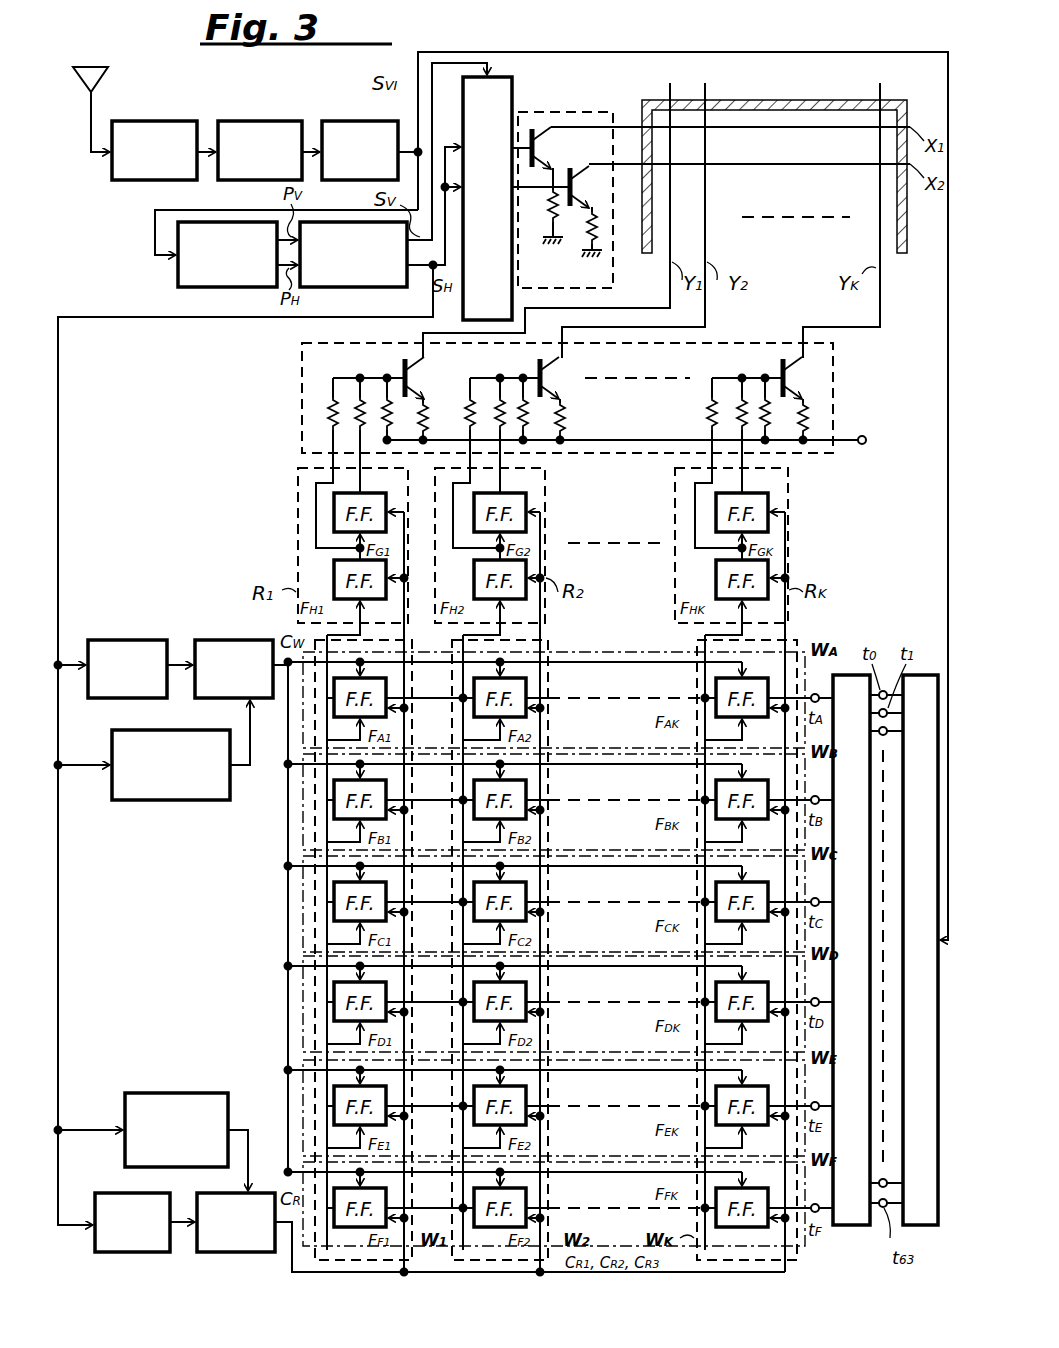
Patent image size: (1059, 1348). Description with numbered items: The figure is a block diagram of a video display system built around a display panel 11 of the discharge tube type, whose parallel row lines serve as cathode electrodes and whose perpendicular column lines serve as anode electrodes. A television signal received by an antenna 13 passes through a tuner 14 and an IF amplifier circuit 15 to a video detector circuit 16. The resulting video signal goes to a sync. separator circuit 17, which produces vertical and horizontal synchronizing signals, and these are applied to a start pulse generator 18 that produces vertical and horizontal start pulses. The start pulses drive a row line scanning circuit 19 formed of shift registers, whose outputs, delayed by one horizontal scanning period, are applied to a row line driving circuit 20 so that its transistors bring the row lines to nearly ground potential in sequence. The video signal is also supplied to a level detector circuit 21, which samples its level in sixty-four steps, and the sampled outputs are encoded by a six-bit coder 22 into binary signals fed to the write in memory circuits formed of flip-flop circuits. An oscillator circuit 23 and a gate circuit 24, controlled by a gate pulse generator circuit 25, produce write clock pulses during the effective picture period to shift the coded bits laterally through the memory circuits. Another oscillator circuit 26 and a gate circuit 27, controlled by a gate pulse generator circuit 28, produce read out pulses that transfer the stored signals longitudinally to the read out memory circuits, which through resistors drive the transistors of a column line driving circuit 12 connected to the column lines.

The display panel 11 is at (906, 248).
The column line driving circuit 12 is at (833, 398).
The antenna 13 is at (104, 80).
The tuner 14 is at (169, 121).
The IF amplifier circuit 15 is at (249, 121).
The video detector circuit 16 is at (337, 121).
The sync. separator circuit 17 is at (178, 290).
The start pulse generator 18 is at (358, 266).
The row line scanning circuit 19 is at (513, 88).
The row line driving circuit 20 is at (606, 268).
The level detector circuit 21 is at (925, 1226).
The 6-bit coder 22 is at (852, 1226).
The oscillator circuit 23 is at (112, 640).
The gate circuit 24 is at (222, 640).
The gate pulse generator circuit 25 is at (190, 802).
The oscillator circuit 26 is at (142, 1254).
The gate circuit 27 is at (220, 1254).
The gate pulse generator circuit 28 is at (178, 1092).